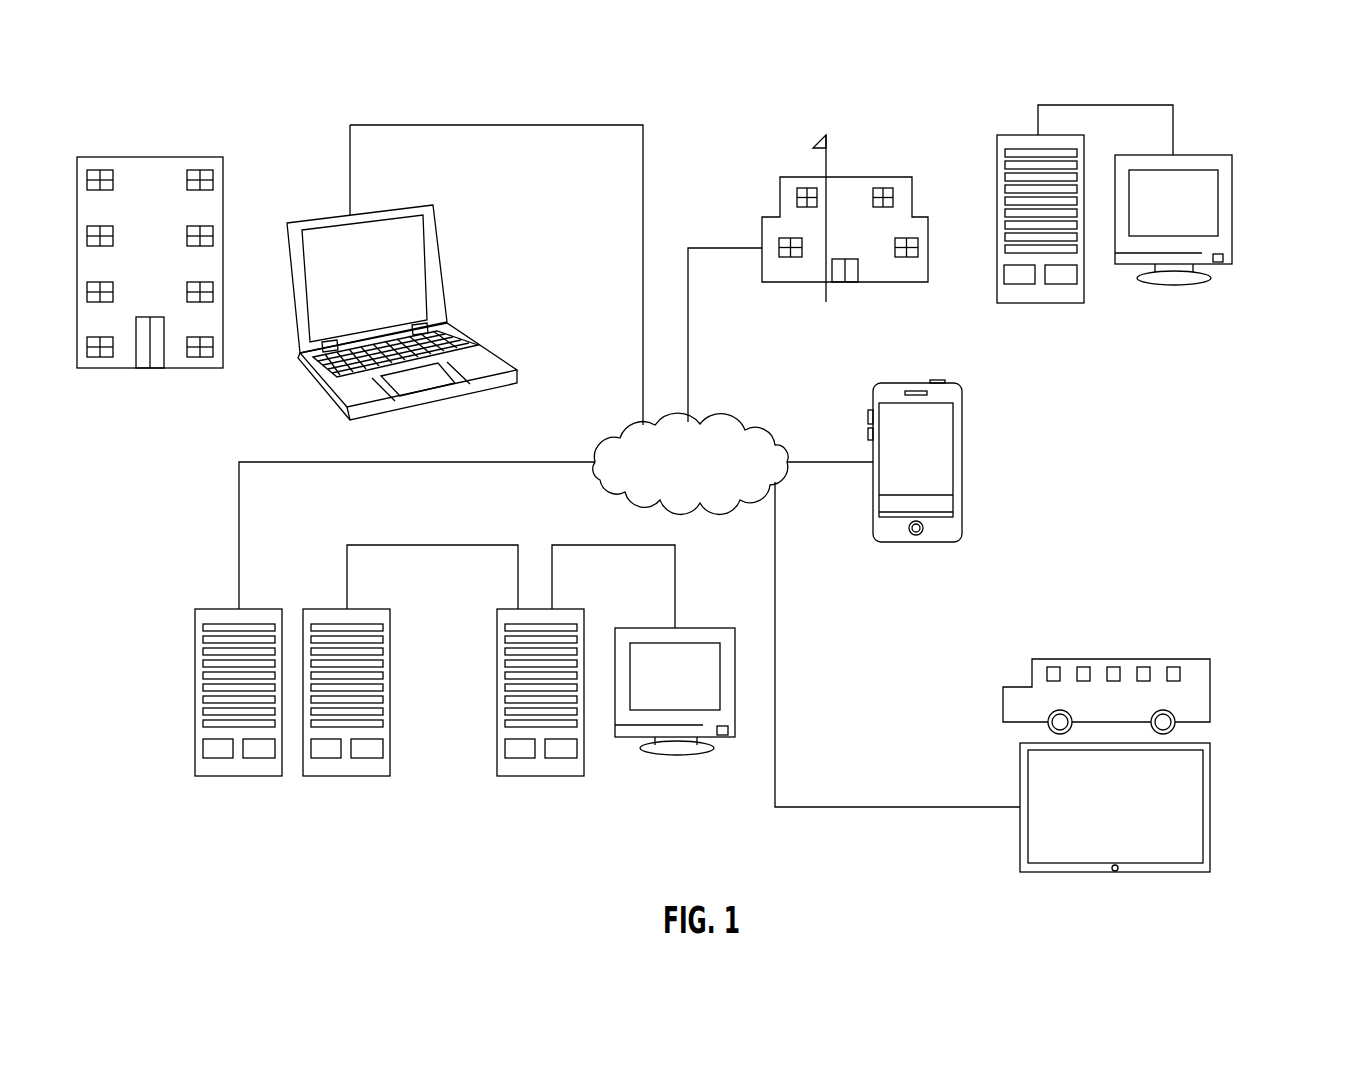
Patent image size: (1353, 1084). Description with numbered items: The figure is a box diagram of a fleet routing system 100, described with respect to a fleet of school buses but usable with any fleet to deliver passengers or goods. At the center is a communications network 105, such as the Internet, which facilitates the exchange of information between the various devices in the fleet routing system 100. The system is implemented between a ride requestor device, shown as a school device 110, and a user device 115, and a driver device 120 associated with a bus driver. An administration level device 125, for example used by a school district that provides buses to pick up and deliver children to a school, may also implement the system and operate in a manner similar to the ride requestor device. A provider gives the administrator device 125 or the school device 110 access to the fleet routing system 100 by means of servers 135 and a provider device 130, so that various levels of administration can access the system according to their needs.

The fleet routing system 100 is at (1251, 88).
The communications network 105 is at (709, 477).
The school device 110 is at (1038, 303).
The user device 115 is at (913, 545).
The driver device 120 is at (1075, 872).
The administration level device 125 is at (333, 408).
The provider device 130 is at (540, 776).
The servers 135 is at (237, 776).